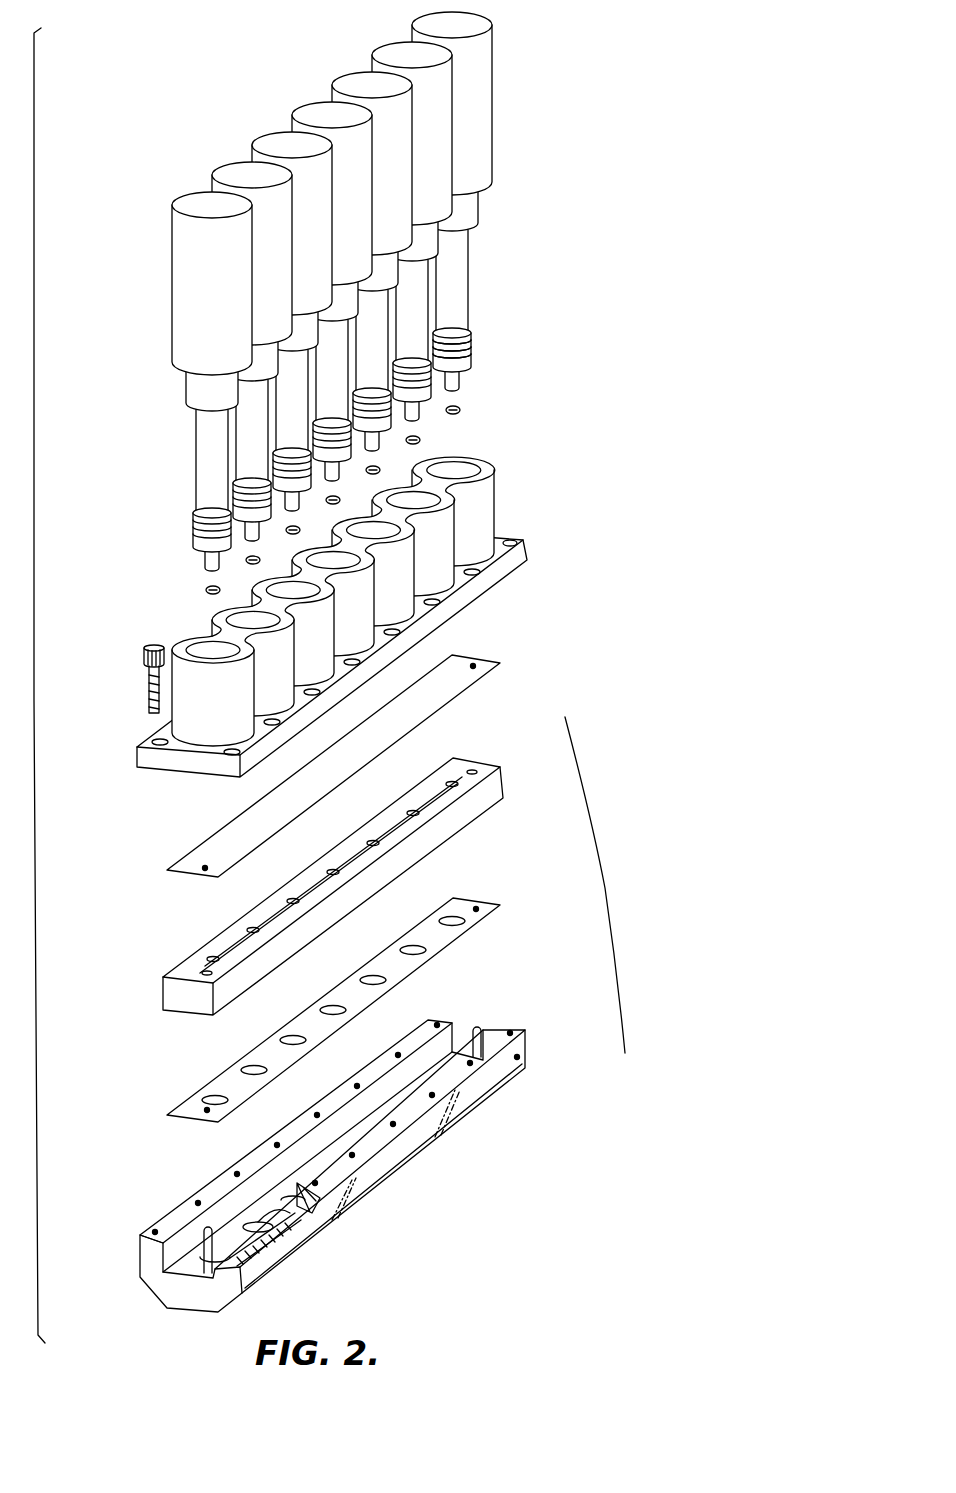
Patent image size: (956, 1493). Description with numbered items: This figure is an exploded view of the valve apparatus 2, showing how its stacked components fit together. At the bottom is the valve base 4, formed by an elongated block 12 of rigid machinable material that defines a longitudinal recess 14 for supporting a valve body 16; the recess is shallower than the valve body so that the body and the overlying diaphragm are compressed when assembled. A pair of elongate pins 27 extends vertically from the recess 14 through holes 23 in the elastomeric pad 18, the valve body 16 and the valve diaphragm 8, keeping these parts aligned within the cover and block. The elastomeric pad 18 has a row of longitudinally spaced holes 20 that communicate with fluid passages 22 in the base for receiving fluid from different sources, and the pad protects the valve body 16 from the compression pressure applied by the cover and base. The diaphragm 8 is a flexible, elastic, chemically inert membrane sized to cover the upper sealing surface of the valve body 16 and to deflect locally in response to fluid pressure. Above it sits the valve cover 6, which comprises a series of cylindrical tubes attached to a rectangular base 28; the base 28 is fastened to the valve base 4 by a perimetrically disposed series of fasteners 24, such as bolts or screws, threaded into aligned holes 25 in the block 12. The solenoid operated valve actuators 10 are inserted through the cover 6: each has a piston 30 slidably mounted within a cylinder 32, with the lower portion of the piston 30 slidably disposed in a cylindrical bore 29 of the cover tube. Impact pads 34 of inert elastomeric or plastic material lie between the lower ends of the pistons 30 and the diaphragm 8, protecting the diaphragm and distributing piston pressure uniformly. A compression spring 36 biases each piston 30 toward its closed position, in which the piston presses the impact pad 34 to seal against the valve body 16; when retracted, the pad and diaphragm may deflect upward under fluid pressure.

The valve apparatus 2 is at (717, 427).
The valve base 4 is at (605, 888).
The valve cover 6 is at (368, 597).
The valve diaphragm 8 is at (515, 651).
The solenoid operated valve actuators 10 is at (351, 291).
The elongated block 12 is at (325, 1153).
The longitudinal recess 14 is at (265, 1183).
The valve body 16 is at (160, 995).
The elastomeric pad 18 is at (318, 1012).
The holes 20 is at (462, 923).
The fluid passages 22 is at (294, 1216).
The holes 23 is at (476, 771).
The fasteners 24 is at (144, 655).
The holes 25 is at (528, 1032).
The elongate pins 27 is at (478, 1027).
The rectangular base 28 is at (526, 554).
The cylindrical bores 29 is at (459, 469).
The piston 30 is at (480, 201).
The cylinder 32 is at (183, 300).
The impact pads 34 is at (207, 590).
The compression spring 36 is at (470, 340).